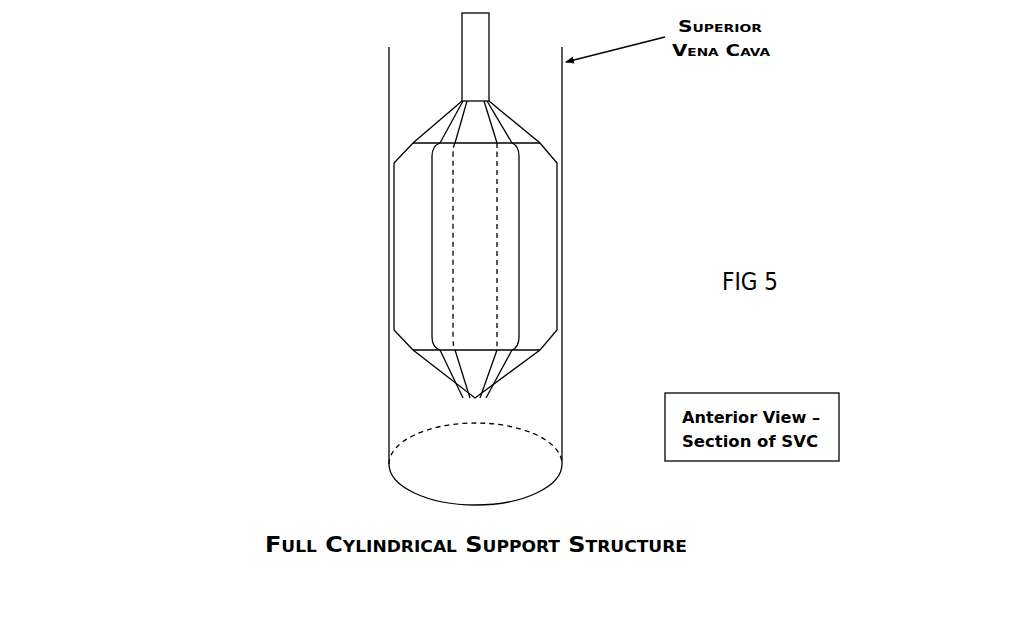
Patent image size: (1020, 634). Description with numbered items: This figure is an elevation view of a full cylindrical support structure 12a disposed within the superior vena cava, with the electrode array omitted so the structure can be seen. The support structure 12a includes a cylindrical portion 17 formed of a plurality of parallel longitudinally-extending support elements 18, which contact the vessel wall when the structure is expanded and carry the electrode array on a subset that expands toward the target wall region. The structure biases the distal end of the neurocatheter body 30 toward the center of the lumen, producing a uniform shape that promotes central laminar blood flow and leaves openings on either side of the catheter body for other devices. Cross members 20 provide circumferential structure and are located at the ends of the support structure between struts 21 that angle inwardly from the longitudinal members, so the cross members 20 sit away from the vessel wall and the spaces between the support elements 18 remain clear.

The neurocatheter body 30 is at (461, 40).
The full cylindrical support structure 12a is at (473, 249).
The cylindrical portion 17 is at (567, 246).
The longitudinally-extending support elements 18 is at (620, 333).
The cross members 20 is at (267, 249).
The struts 21 is at (414, 249).